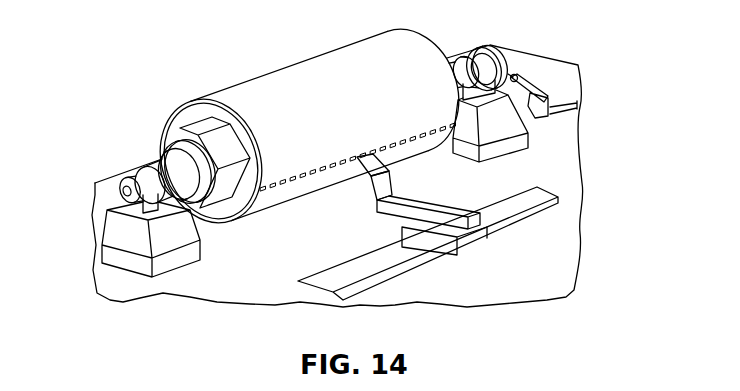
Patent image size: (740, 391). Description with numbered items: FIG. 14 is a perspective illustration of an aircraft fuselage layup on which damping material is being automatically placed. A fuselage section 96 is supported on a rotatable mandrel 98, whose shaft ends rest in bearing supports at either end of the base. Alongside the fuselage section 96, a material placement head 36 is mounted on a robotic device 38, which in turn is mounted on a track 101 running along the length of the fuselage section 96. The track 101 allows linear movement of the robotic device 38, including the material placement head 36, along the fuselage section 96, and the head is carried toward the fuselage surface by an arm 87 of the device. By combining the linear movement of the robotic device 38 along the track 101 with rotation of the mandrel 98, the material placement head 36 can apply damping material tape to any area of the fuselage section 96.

The fuselage section 96 is at (272, 68).
The rotatable mandrel 98 is at (162, 147).
The material placement head 36 is at (356, 161).
The sensor arm 87 is at (362, 170).
The robotic device 38 is at (413, 224).
The track 101 is at (519, 213).